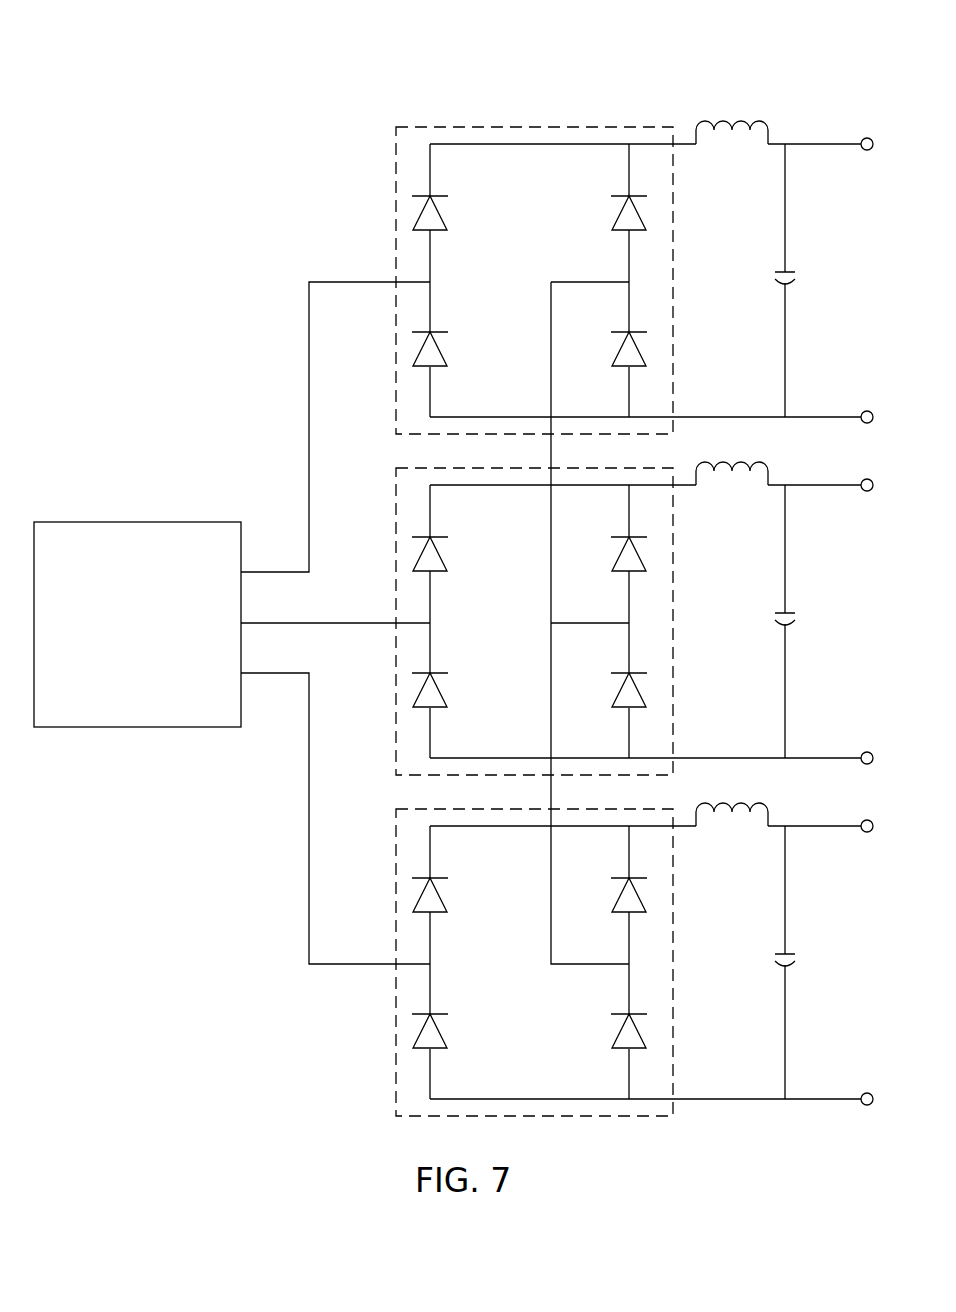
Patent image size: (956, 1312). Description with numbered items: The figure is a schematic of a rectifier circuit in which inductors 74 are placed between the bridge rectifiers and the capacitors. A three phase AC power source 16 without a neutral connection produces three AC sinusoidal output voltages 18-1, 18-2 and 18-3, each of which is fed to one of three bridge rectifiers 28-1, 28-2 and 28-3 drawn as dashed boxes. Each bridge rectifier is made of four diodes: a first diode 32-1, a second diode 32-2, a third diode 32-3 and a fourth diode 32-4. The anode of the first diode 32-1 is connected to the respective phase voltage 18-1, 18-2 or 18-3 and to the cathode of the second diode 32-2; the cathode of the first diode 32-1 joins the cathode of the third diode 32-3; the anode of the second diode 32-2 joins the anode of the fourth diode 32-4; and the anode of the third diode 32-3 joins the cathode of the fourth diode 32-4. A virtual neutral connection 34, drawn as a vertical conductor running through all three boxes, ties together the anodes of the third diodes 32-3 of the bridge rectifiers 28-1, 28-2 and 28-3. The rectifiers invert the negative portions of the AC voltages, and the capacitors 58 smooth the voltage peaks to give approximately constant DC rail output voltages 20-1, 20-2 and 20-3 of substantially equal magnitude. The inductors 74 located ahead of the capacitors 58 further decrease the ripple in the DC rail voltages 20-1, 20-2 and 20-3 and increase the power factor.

The three phase AC power source 16 is at (84, 522).
The AC sinusoidal output voltage 18-1 is at (309, 416).
The AC sinusoidal output voltage 18-2 is at (330, 623).
The AC sinusoidal output voltage 18-3 is at (309, 775).
The bridge rectifier 28-1 is at (467, 127).
The bridge rectifier 28-2 is at (408, 469).
The bridge rectifier 28-3 is at (408, 810).
The first diode 32-1 is at (442, 222).
The second diode 32-2 is at (442, 358).
The third diode 32-3 is at (620, 222).
The fourth diode 32-4 is at (620, 358).
The virtual neutral connection 34 is at (551, 584).
The capacitor 58 is at (781, 272).
The inductor 74 is at (759, 120).
The DC rail output voltage 20-1 is at (826, 148).
The DC rail output voltage 20-2 is at (826, 489).
The DC rail output voltage 20-3 is at (826, 830).